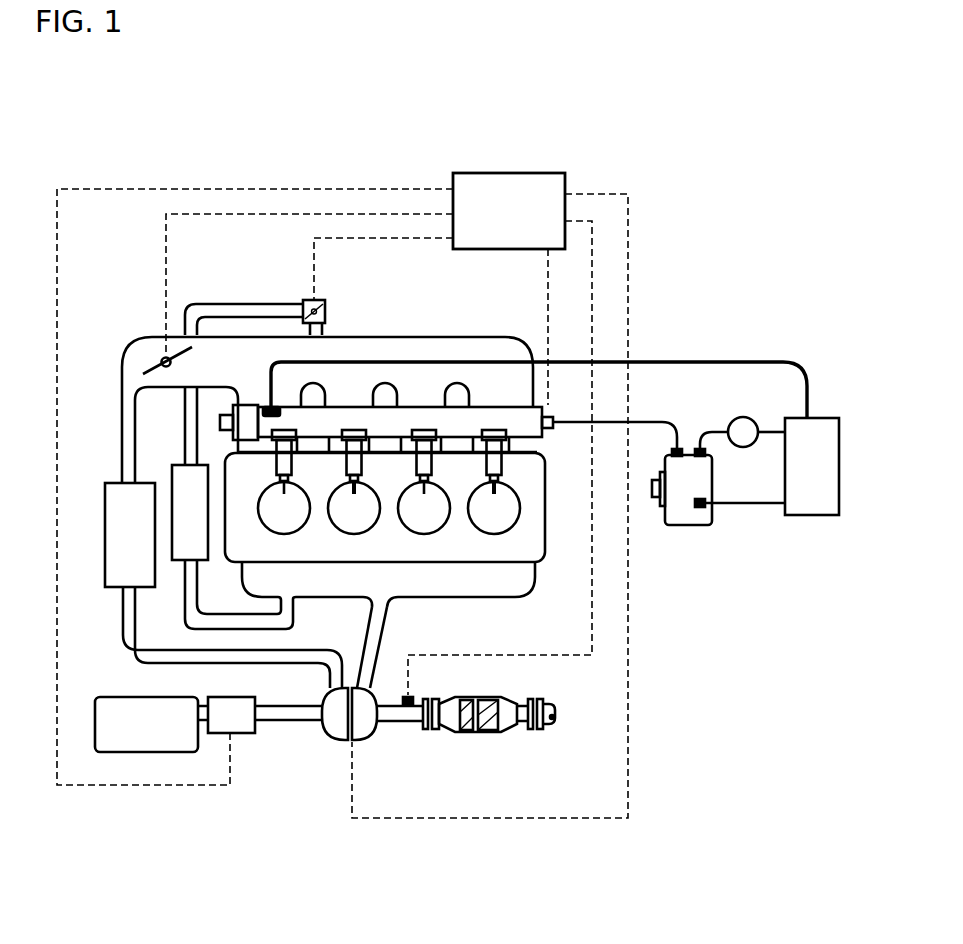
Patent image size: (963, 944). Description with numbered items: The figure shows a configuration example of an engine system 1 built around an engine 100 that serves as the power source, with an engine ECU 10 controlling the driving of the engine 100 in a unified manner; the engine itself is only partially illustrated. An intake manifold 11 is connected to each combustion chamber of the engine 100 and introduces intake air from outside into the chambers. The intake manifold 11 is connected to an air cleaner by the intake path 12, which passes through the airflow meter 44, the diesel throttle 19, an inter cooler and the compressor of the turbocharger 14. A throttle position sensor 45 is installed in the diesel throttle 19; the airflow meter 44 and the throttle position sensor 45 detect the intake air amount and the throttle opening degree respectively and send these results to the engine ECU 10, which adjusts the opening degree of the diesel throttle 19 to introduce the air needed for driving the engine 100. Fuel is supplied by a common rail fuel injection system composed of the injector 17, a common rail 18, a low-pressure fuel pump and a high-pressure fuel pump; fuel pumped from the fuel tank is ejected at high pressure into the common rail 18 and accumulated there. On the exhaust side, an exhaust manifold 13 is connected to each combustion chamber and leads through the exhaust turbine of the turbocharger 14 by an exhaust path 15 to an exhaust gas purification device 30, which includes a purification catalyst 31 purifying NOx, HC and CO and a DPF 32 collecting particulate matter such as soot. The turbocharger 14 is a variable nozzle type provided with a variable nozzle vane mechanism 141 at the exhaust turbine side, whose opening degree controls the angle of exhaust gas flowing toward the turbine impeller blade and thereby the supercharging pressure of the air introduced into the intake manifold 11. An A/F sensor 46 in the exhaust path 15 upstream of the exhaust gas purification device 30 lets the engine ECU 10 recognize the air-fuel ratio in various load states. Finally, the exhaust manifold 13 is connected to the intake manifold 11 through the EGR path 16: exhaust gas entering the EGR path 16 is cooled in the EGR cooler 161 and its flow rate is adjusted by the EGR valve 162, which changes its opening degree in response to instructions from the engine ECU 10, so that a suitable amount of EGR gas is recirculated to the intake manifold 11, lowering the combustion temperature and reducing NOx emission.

The engine system 1 is at (98, 117).
The engine ECU 10 is at (566, 172).
The intake manifold 11 is at (485, 333).
The intake path 12 is at (327, 646).
The exhaust manifold 13 is at (533, 575).
The turbocharger 14 is at (358, 743).
The variable nozzle vane mechanism 141 is at (366, 743).
The exhaust path 15 is at (390, 622).
The EGR path 16 is at (180, 603).
The EGR cooler 161 is at (172, 462).
The EGR valve 162 is at (329, 298).
The injector 17 is at (500, 462).
The common rail 18 is at (428, 405).
The diesel throttle 19 is at (144, 332).
The throttle position sensor 45 is at (162, 358).
The exhaust gas purification device 30 is at (477, 735).
The purification catalyst 31 is at (472, 754).
The DPF 32 is at (494, 754).
The airflow meter 44 is at (243, 742).
The A/F sensor 46 is at (412, 695).
The engine 100 is at (563, 741).